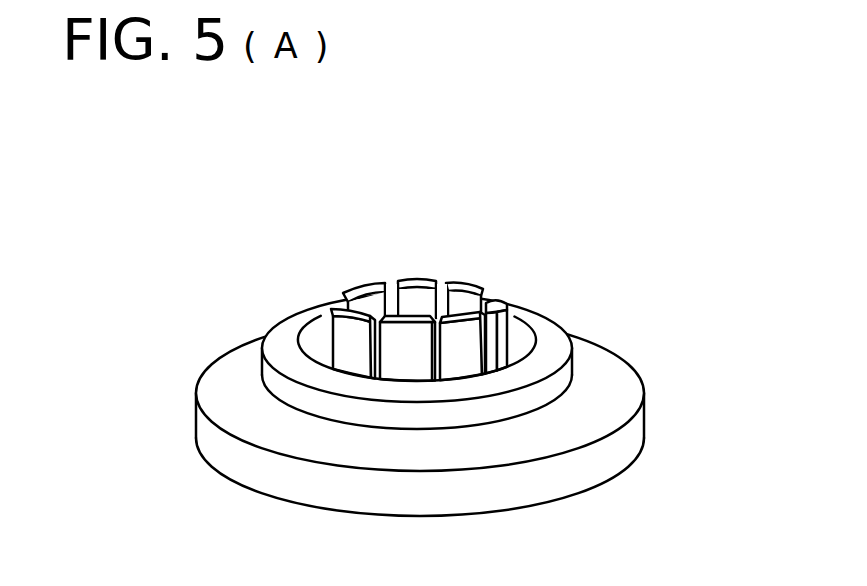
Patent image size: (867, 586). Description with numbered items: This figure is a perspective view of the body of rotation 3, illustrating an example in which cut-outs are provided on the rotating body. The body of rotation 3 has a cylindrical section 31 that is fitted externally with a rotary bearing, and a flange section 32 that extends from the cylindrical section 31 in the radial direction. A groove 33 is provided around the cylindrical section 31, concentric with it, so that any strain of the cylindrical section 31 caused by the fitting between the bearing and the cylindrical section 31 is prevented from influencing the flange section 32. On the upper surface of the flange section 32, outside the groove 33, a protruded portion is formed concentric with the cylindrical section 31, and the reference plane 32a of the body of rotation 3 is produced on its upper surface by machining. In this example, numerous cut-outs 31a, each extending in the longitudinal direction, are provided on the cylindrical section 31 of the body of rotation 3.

The body of rotation 3 is at (427, 344).
The cylindrical section 31 is at (431, 276).
The cut-outs 31a is at (395, 316).
The flange section 32 is at (203, 440).
The reference plane 32a is at (548, 333).
The groove 33 is at (318, 334).